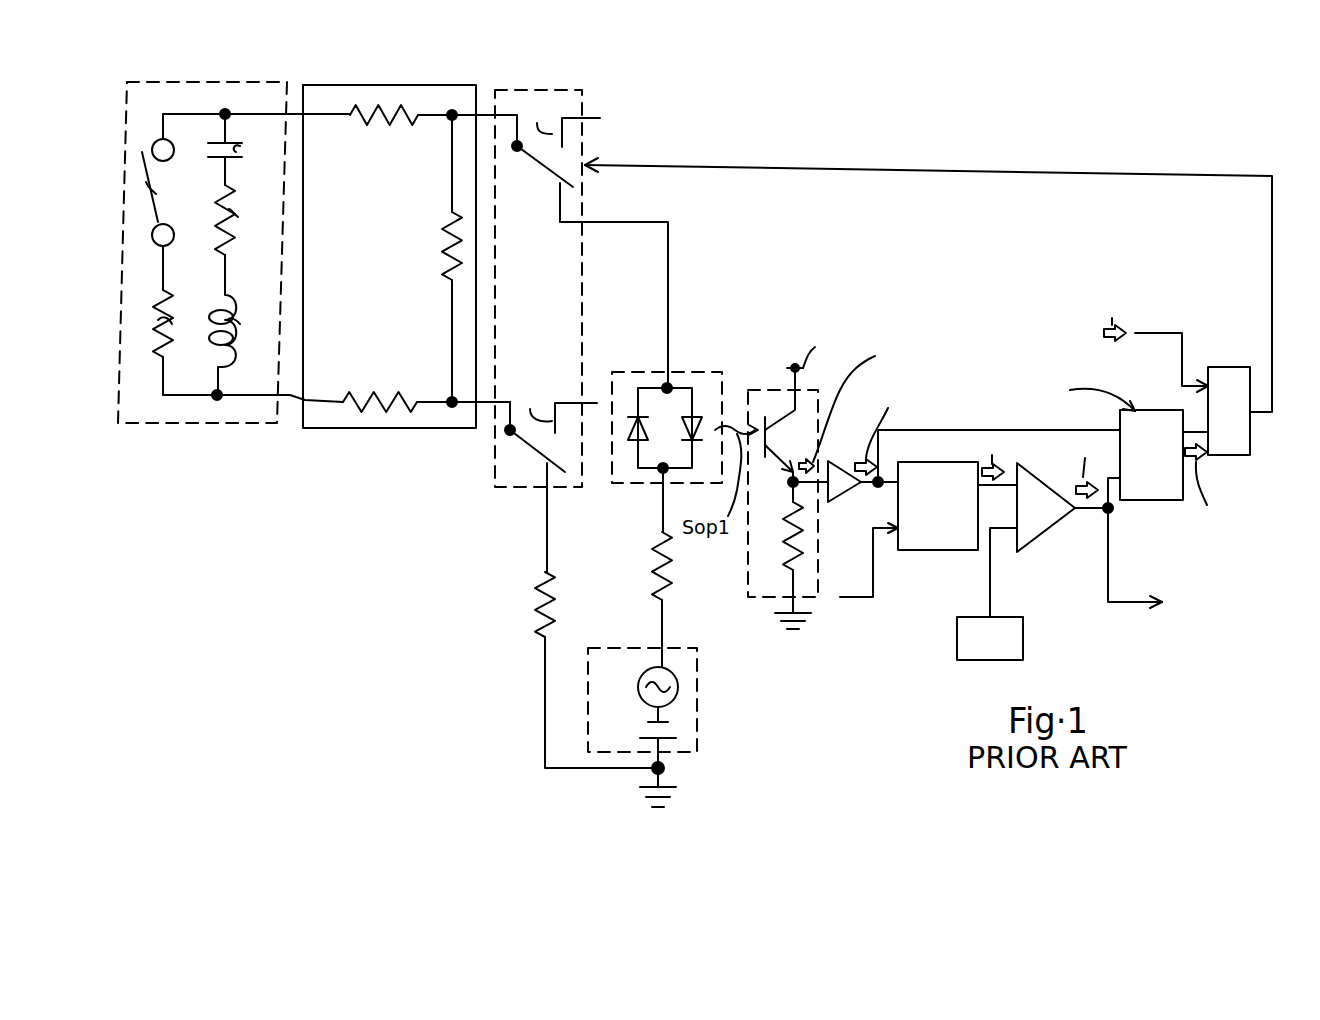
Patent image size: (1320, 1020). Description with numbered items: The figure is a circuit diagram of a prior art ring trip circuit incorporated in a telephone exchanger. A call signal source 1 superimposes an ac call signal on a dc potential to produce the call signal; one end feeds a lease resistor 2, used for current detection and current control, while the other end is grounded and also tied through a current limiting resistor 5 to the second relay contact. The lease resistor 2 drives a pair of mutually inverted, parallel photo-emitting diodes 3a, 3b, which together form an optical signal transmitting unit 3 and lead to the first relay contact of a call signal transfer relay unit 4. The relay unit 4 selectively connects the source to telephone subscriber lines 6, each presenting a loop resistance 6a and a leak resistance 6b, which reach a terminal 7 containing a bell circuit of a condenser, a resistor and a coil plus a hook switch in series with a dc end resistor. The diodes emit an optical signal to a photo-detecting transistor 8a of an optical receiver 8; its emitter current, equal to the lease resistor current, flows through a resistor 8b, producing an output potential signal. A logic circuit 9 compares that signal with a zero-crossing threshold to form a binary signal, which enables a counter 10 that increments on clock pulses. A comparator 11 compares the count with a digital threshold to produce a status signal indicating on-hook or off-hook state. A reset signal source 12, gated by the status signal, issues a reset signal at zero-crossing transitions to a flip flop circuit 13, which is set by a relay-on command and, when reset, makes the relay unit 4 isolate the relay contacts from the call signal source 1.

The call signal source 1 is at (697, 715).
The lease resistor 2 is at (655, 590).
The optical signal transmitting unit 3 is at (685, 414).
The photo-emitting diode 3a is at (640, 417).
The photo-emitting diode 3b is at (690, 417).
The call signal transfer relay unit 4 is at (522, 90).
The current limiting resistor 5 is at (536, 602).
The telephone subscriber lines 6 is at (410, 244).
The loop resistance 6a is at (380, 125).
The leak resistance 6b is at (446, 266).
The terminal 7 is at (155, 84).
The optical receiver 8 is at (823, 484).
The photo-detecting transistor 8a is at (793, 457).
The resistor 8b is at (788, 512).
The logic circuit 9 is at (840, 466).
The counter 10 is at (936, 552).
The comparator 11 is at (1040, 540).
The reset signal source 12 is at (1148, 502).
The flip flop circuit 13 is at (1230, 462).